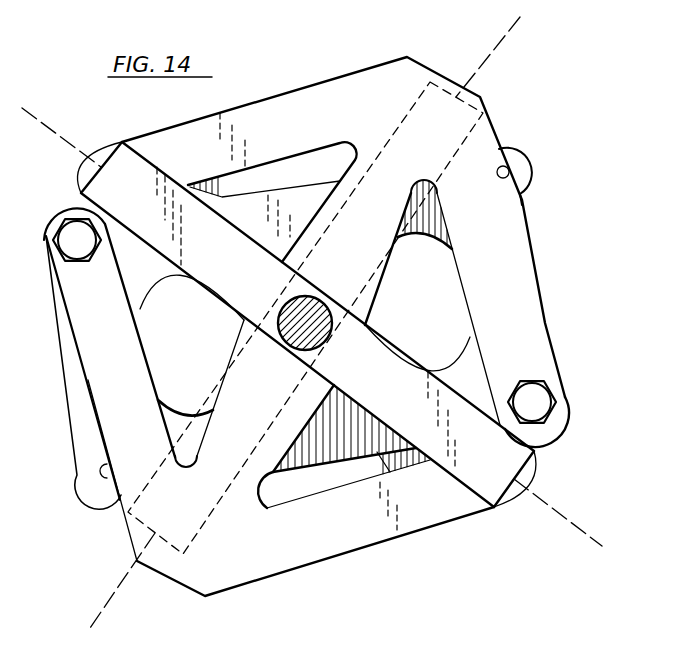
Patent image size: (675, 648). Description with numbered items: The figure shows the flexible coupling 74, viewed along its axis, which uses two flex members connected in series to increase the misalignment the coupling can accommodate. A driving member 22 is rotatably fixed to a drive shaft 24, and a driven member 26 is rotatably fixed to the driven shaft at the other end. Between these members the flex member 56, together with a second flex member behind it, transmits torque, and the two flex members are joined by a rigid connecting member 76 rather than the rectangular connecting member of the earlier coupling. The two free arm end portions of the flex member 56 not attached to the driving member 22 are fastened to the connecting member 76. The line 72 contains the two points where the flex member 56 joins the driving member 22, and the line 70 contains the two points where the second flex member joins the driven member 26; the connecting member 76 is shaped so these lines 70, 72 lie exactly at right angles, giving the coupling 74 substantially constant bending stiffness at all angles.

The driving member 22 is at (226, 253).
The drive shaft 24 is at (313, 298).
The driven member 26 is at (487, 108).
The flex member 56 is at (302, 88).
The line 70 is at (495, 53).
The line 72 is at (40, 120).
The coupling 74 is at (560, 146).
The rigid connecting member 76 is at (523, 180).